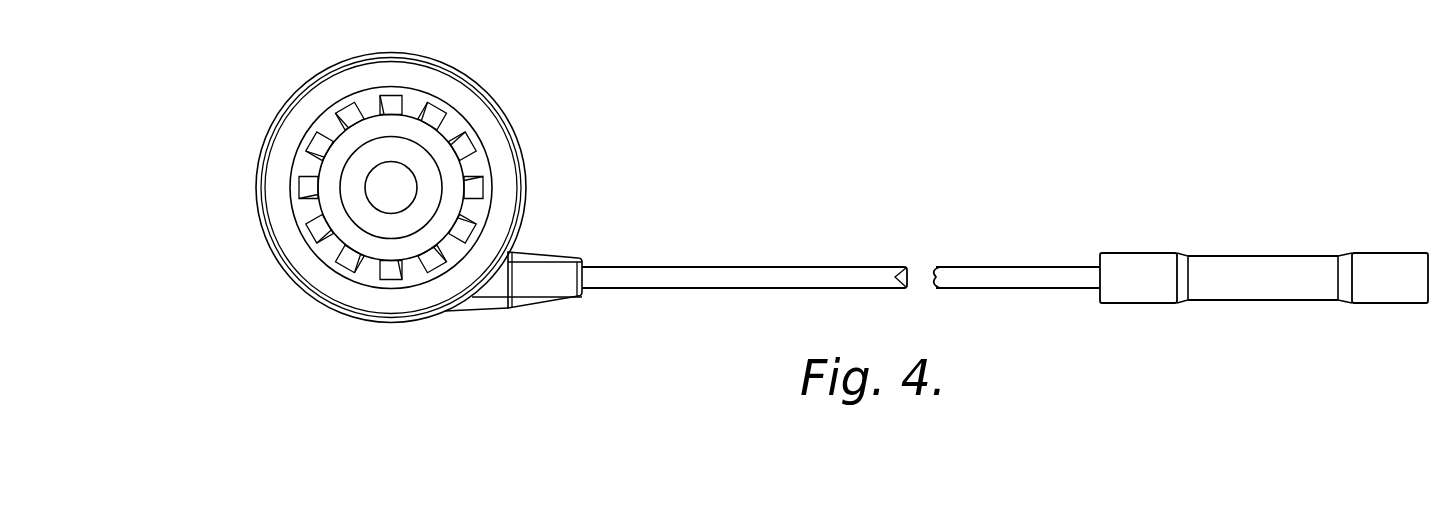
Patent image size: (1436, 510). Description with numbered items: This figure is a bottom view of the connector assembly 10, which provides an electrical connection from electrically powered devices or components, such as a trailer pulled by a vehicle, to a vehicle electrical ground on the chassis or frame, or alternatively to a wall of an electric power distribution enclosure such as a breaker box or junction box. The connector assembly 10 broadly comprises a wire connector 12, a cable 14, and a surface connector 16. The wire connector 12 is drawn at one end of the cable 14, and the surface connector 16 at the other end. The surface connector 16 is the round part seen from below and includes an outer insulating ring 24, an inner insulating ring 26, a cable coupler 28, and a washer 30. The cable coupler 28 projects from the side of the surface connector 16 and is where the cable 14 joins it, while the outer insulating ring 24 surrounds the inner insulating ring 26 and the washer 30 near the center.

The connector assembly 10 is at (832, 140).
The wire connector 12 is at (1243, 208).
The cable 14 is at (898, 238).
The surface connector 16 is at (268, 65).
The outer insulating ring 24 is at (273, 168).
The inner insulating ring 26 is at (350, 193).
The cable coupler 28 is at (552, 285).
The washer 30 is at (470, 110).